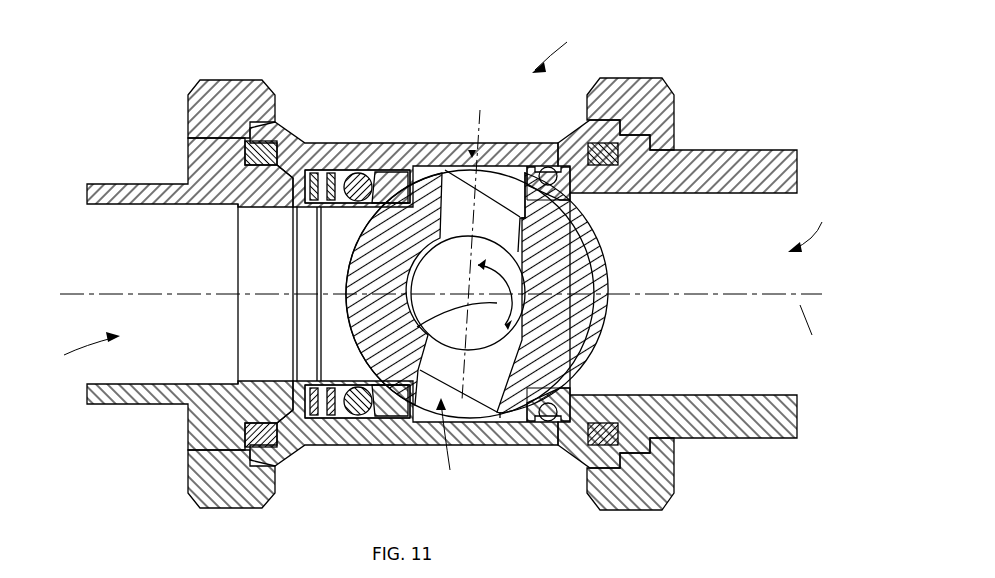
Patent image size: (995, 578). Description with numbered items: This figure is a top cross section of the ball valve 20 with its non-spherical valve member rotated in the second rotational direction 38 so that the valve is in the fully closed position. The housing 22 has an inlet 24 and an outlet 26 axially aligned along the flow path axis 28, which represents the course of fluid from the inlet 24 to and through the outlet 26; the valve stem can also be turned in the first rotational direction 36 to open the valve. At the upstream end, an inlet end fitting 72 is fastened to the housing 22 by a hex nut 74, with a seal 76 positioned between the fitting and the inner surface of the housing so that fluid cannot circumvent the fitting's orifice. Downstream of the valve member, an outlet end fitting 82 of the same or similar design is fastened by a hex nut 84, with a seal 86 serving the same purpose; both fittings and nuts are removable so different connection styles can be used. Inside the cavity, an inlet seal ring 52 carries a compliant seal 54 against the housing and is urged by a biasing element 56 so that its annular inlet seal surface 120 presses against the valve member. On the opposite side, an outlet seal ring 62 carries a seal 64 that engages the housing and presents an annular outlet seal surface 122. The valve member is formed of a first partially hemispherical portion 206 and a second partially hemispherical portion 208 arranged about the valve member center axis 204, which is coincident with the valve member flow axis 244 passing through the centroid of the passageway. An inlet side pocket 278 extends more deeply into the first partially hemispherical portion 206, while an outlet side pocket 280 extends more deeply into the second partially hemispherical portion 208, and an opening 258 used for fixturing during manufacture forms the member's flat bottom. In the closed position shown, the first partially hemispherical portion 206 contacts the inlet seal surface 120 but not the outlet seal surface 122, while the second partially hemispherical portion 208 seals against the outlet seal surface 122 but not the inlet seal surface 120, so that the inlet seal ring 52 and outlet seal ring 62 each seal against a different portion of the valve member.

The ball valve 20 is at (564, 49).
The housing 22 is at (372, 143).
The inlet 24 is at (78, 354).
The outlet 26 is at (809, 224).
The flow path axis 28 is at (815, 333).
The first rotational direction 36 is at (501, 295).
The second rotational direction 38 is at (350, 332).
The inlet seal ring 52 is at (384, 412).
The compliant seal 54 is at (358, 408).
The biasing element 56 is at (318, 412).
The outlet seal ring 62 is at (564, 140).
The seal 64 is at (534, 165).
The inlet end fitting 72 is at (124, 190).
The hex nut 74 is at (252, 85).
The seal 76 is at (270, 152).
The outlet end fitting 82 is at (738, 422).
The hex nut 84 is at (613, 317).
The seal 86 is at (602, 500).
The annular inlet seal surface 120 is at (410, 410).
The annular outlet seal surface 122 is at (525, 402).
The valve member center axis 204 is at (458, 205).
The first partially hemispherical portion 206 is at (350, 250).
The second partially hemispherical portion 208 is at (582, 344).
The valve member flow axis 244 is at (468, 388).
The opening 258 is at (487, 235).
The inlet side pocket 278 is at (454, 444).
The outlet side pocket 280 is at (472, 150).